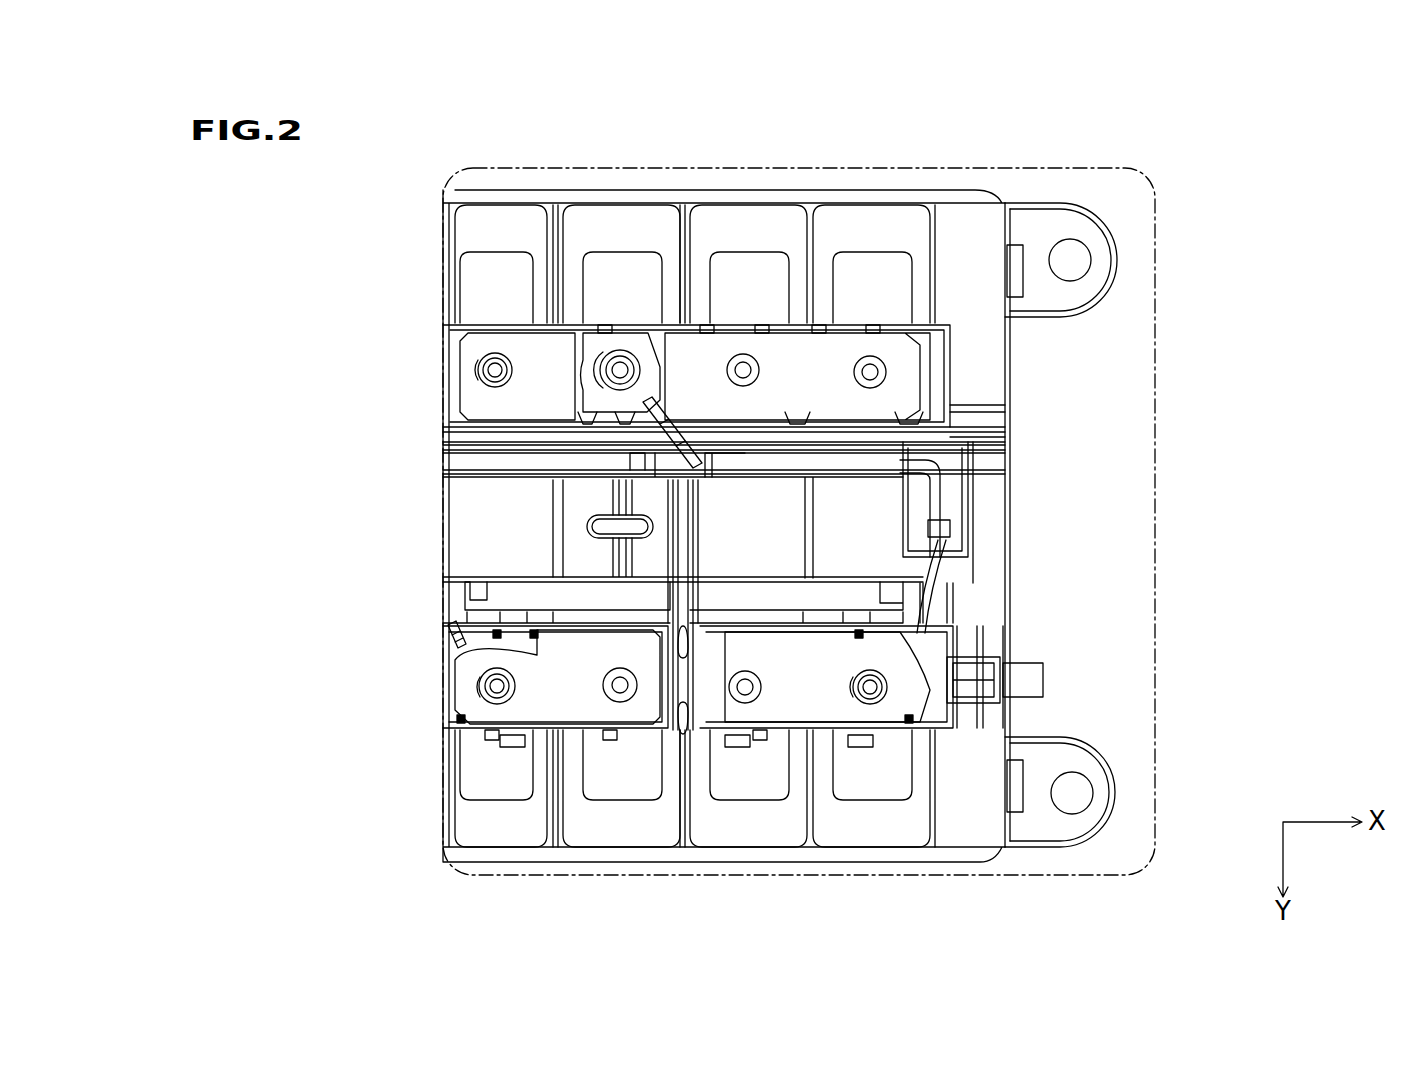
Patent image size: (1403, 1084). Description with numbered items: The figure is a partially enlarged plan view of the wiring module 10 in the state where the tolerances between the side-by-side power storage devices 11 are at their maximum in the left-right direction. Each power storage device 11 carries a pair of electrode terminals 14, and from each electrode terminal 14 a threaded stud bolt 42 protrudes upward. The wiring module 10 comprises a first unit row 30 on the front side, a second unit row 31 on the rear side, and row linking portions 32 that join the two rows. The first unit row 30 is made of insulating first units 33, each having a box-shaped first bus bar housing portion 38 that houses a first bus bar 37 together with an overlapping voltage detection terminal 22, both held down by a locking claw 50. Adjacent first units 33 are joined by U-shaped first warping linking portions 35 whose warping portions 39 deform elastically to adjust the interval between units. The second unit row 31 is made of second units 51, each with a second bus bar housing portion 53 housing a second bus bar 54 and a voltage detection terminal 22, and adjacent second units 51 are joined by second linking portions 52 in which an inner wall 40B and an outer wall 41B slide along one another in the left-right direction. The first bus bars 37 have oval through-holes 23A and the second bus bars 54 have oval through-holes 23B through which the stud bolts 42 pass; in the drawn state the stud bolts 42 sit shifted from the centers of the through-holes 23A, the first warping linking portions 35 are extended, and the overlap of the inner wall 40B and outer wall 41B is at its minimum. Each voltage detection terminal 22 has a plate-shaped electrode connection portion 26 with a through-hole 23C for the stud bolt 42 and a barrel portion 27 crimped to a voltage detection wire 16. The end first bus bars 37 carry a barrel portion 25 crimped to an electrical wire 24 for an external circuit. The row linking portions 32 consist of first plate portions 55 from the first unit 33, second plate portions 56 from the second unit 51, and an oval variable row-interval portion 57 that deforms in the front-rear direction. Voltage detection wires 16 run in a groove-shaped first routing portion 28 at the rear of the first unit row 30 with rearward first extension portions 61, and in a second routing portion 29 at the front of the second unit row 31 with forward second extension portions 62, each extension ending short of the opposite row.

The wiring module 10 is at (282, 355).
The power storage device 11 is at (462, 217).
The electrode terminal 14 is at (492, 263).
The voltage detection wire 16 is at (653, 462).
The voltage detection terminal 22 is at (751, 520).
The through-hole 23A is at (492, 742).
The through-hole 23B is at (514, 373).
The through-hole 23C is at (612, 380).
The electrical wire 24 is at (1028, 667).
The barrel portion 25 is at (988, 652).
The electrode connection portion 26 is at (628, 332).
The barrel portion 27 is at (696, 360).
The first routing portion 28 is at (467, 596).
The second routing portion 29 is at (470, 468).
The first unit row 30 is at (500, 632).
The second unit row 31 is at (457, 373).
The row linking portion 32 is at (332, 485).
The first unit 33 is at (455, 735).
The first warping linking portion 35 is at (700, 640).
The first bus bar 37 is at (555, 735).
The first bus bar housing portion 38 is at (460, 718).
The warping portion 39 is at (688, 610).
The inner wall 40B is at (650, 400).
The outer wall 41B is at (700, 430).
The stud bolt 42 is at (497, 350).
The locking claw 50 is at (460, 650).
The second unit 51 is at (448, 262).
The second linking portion 52 is at (734, 280).
The second bus bar housing portion 53 is at (912, 330).
The second bus bar 54 is at (466, 345).
The first plate portion 55 is at (628, 562).
The second plate portion 56 is at (613, 492).
The variable row-interval portion 57 is at (587, 527).
The first extension portion 61 is at (945, 548).
The second extension portion 62 is at (958, 512).